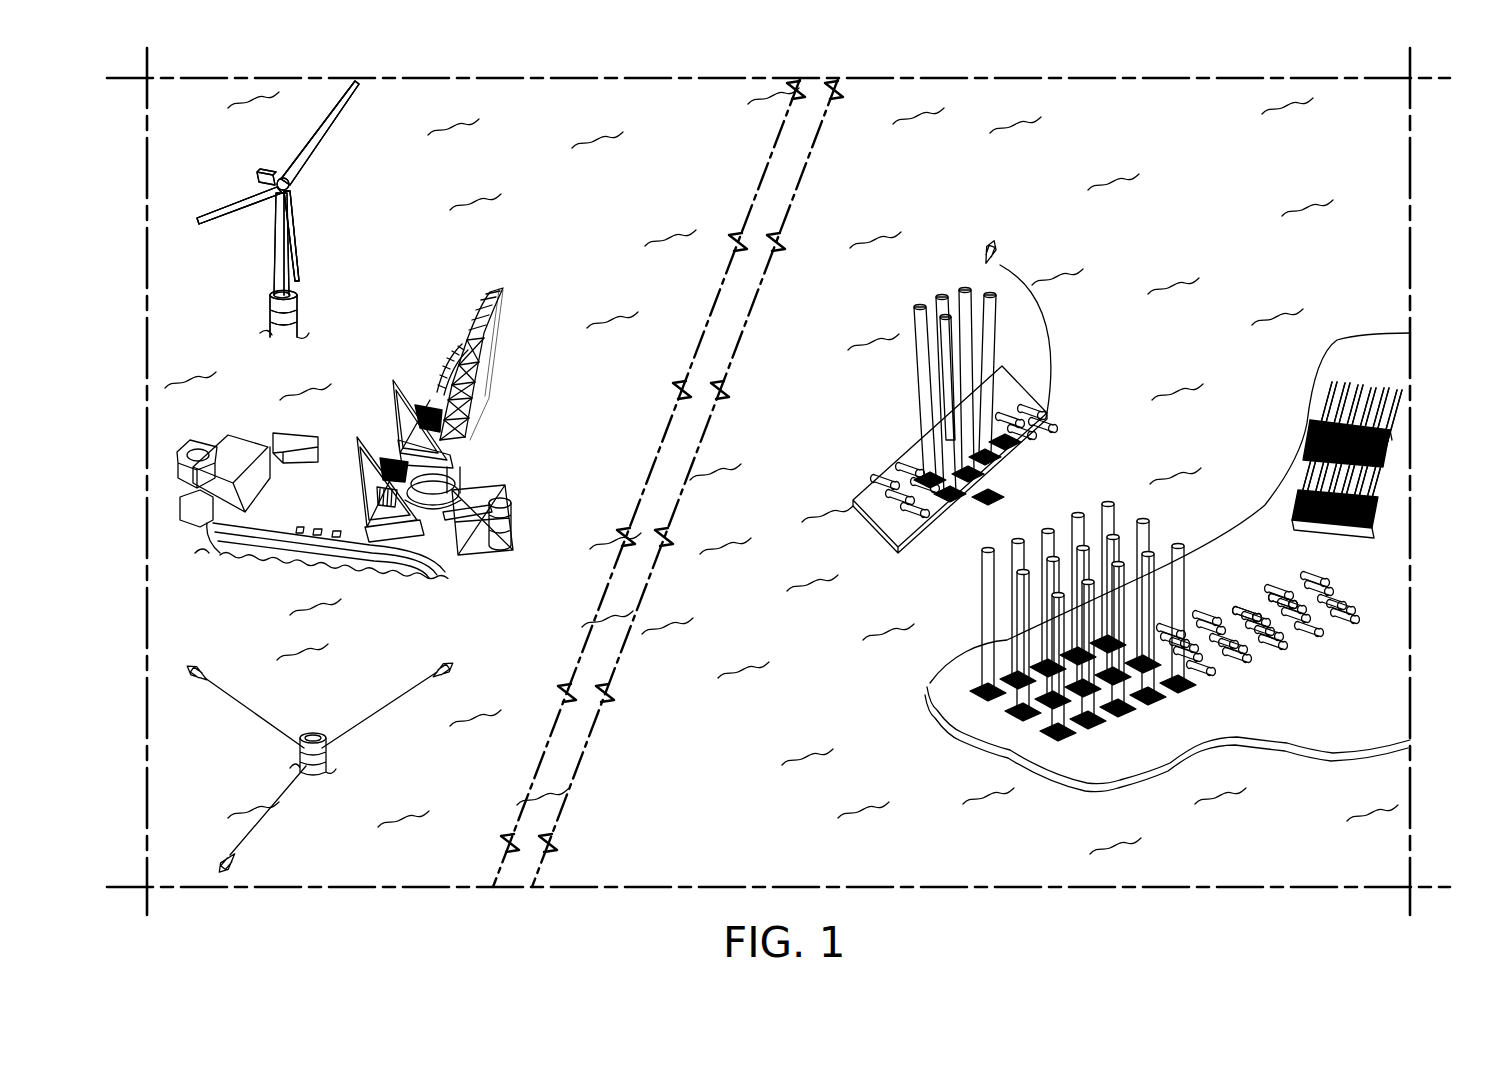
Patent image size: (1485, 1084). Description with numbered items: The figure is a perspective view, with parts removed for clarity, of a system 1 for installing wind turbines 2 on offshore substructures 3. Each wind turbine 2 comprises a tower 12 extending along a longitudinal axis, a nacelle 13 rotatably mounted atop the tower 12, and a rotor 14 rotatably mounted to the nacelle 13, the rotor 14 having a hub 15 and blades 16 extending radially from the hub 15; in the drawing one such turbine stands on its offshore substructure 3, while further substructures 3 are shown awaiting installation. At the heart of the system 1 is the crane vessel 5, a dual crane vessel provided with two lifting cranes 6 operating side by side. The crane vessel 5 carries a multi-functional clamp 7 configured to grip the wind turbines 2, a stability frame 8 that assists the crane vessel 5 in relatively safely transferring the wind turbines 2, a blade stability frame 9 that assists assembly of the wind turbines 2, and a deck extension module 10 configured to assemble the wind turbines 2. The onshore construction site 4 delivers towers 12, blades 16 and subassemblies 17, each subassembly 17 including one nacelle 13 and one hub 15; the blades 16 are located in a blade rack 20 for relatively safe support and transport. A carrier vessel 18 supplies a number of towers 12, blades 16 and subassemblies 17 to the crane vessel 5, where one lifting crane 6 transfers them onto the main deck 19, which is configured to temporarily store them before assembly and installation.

The system 1 is at (1158, 197).
The wind turbine 2 is at (342, 191).
The offshore substructure 3 is at (248, 333).
The onshore construction site 4 is at (1423, 512).
The crane vessel 5 is at (387, 428).
The lifting crane 6 is at (517, 300).
The multi-functional clamp 7 is at (523, 500).
The stability frame 8 is at (483, 490).
The blade stability frame 9 is at (501, 397).
The deck extension module 10 is at (472, 556).
The tower 12 is at (272, 262).
The nacelle 13 is at (268, 172).
The rotor 14 is at (309, 203).
The hub 15 is at (291, 184).
The blade 16 is at (341, 104).
The subassembly 17 is at (1010, 405).
The carrier vessel 18 is at (1061, 440).
The main deck 19 is at (296, 505).
The blade rack 20 is at (1378, 542).